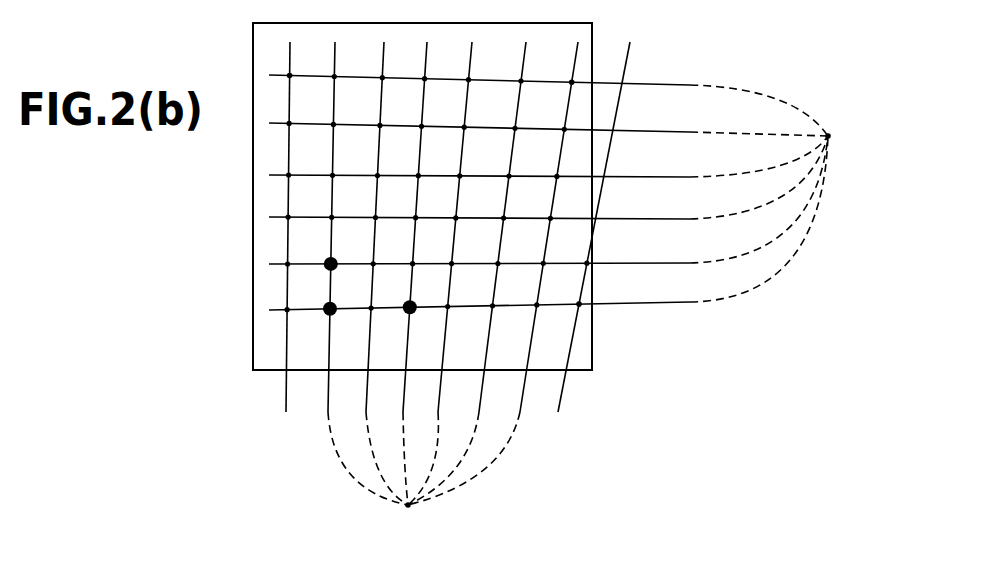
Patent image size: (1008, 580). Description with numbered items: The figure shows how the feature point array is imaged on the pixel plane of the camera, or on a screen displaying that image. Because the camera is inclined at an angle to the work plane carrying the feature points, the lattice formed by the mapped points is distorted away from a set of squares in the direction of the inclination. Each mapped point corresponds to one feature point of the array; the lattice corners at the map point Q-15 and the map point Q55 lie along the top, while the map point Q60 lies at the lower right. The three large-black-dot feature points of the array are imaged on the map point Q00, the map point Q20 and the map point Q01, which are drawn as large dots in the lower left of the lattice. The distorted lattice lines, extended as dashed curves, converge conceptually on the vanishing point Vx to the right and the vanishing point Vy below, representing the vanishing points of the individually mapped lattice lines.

The map point Q-15 is at (289, 76).
The map point Q55 is at (572, 81).
The map point Q01 is at (330, 264).
The map point Q00 is at (330, 310).
The map point Q20 is at (410, 309).
The map point Q60 is at (578, 304).
The vanishing point Vx is at (832, 116).
The vanishing point Vy is at (403, 522).